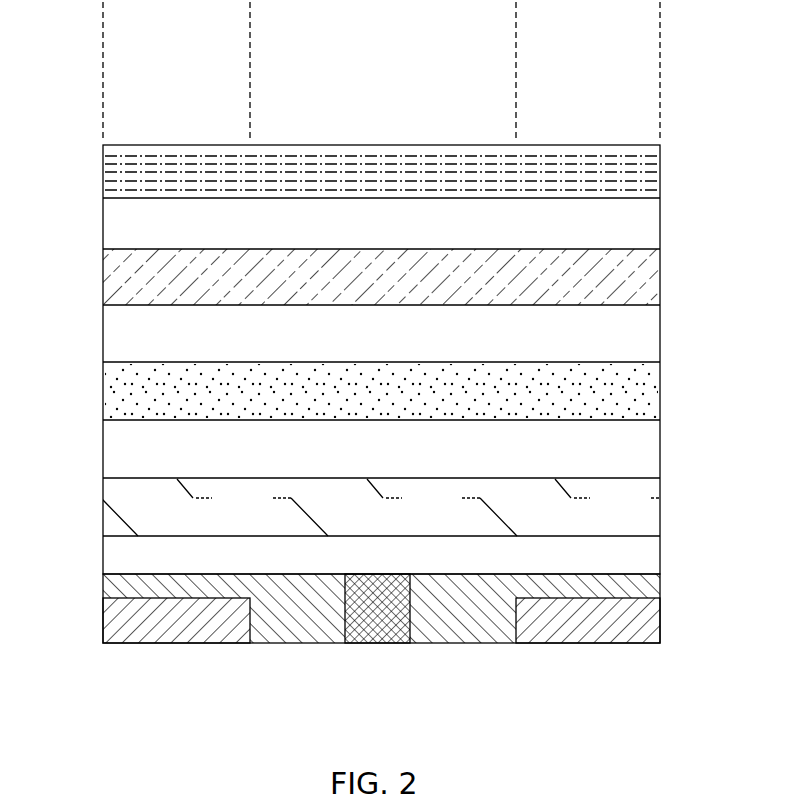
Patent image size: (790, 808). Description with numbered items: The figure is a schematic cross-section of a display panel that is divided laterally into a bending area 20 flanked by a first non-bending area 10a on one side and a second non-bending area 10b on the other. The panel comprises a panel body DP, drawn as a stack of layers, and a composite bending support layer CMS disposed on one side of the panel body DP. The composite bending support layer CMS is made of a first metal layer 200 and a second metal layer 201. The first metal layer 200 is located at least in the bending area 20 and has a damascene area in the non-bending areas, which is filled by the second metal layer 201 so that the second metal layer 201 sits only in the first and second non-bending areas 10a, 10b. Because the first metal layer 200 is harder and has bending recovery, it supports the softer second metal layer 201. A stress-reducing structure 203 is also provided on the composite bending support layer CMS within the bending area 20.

The first non-bending area 10a is at (103, 70).
The bending area 20 is at (507, 75).
The second non-bending area 10b is at (651, 75).
The panel body DP is at (95, 574).
The composite bending support layer CMS is at (95, 576).
The first metal layer 200 is at (650, 581).
The second metal layer 201 is at (642, 627).
The stress-reducing structure 203 is at (358, 646).